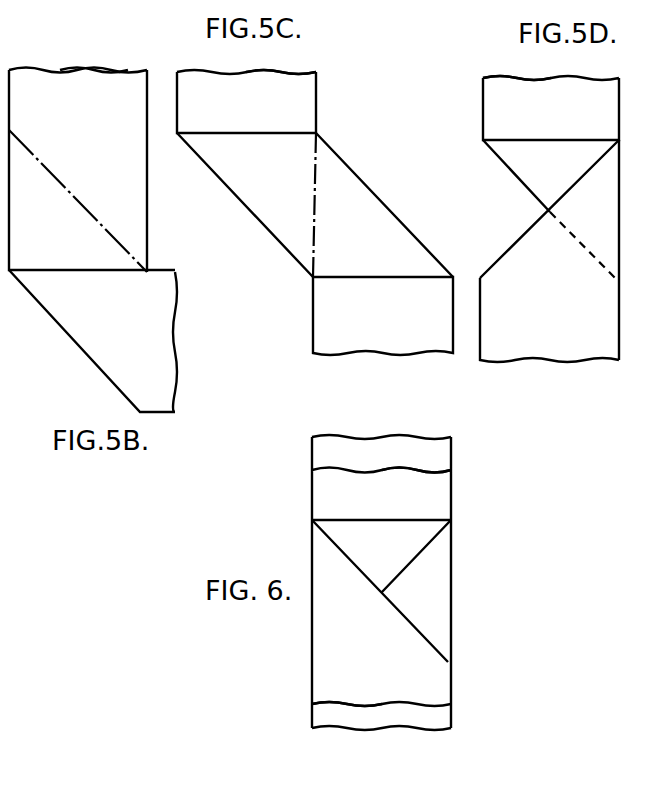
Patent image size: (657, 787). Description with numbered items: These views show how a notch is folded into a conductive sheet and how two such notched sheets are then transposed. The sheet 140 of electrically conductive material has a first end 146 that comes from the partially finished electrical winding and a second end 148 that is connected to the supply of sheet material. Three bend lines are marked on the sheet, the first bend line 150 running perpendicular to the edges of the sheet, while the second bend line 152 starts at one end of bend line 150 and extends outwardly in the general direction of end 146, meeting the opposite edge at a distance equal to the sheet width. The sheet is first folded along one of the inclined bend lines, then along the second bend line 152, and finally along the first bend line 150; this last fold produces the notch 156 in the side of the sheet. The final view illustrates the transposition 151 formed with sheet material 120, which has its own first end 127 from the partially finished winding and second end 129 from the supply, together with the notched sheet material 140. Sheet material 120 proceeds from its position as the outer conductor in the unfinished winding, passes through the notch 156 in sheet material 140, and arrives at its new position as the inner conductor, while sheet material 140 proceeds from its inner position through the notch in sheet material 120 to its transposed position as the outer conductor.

In FIG. 5B, the sheet of electrically conductive material 140 is at (194, 236).
In FIG. 5C, the sheet of electrically conductive material 140 is at (368, 118).
In FIG. 5D, the sheet of electrically conductive material 140 is at (490, 118).
In FIG. 6, the sheet of electrically conductive material 140 is at (318, 450).
In FIG. 5B, the first end 146 is at (108, 70).
In FIG. 5C, the first end 146 is at (316, 72).
In FIG. 5D, the first end 146 is at (490, 78).
In FIG. 6, the first end 146 is at (427, 437).
In FIG. 5B, the second end 148 is at (175, 345).
In FIG. 5C, the second end 148 is at (386, 353).
In FIG. 5D, the second end 148 is at (558, 360).
In FIG. 6, the second end 148 is at (315, 712).
In FIG. 5B, the second bend line 152 is at (55, 178).
In FIG. 5C, the first bend line 150 is at (316, 225).
In FIG. 5D, the notch 156 is at (527, 210).
In FIG. 6, the first end 127 is at (440, 470).
In FIG. 6, the second end 129 is at (385, 728).
In FIG. 6, the sheet of electrically conductive material 120 is at (499, 510).
In FIG. 6, the transposition 151 is at (496, 570).